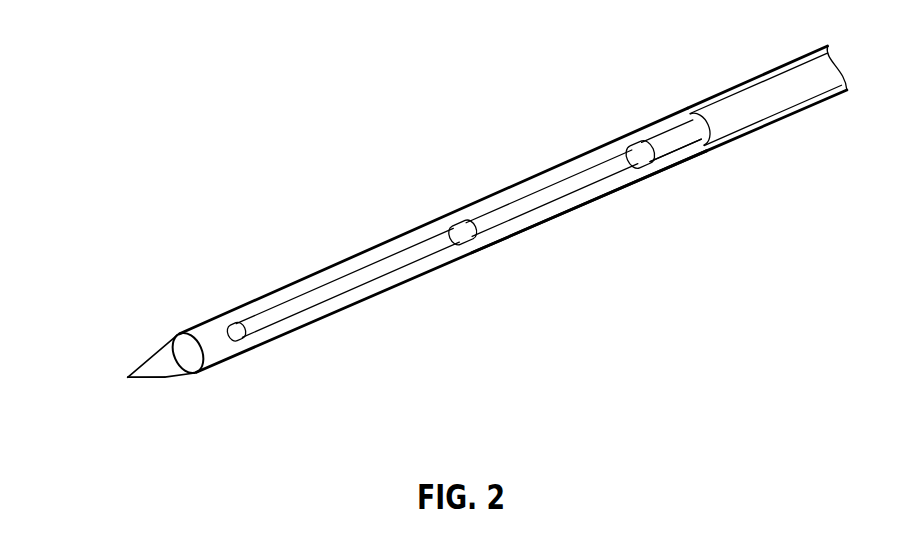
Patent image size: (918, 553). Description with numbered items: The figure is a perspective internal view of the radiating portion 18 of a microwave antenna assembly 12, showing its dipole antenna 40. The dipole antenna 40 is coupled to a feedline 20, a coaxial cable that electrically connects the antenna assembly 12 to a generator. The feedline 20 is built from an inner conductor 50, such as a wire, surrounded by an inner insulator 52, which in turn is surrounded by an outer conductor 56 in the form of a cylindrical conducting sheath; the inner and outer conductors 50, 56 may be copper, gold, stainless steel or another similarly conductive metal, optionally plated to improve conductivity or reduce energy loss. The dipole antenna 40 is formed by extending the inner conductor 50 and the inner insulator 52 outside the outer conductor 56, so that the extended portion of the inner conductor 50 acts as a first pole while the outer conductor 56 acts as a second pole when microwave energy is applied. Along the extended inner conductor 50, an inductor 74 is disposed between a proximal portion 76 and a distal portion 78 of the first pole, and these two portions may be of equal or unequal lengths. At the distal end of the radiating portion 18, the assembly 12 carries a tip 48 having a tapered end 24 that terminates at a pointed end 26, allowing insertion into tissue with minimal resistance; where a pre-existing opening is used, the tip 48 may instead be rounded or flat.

The antenna assembly 12 is at (457, 215).
The radiating portion 18 is at (315, 243).
The feedline 20 is at (768, 69).
The tapered end 24 is at (165, 342).
The pointed end 26 is at (128, 377).
The dipole antenna 40 is at (560, 213).
The tip 48 is at (157, 368).
The inner conductor 50 is at (579, 174).
The inner insulator 52 is at (661, 164).
The outer conductor 56 is at (677, 130).
The inductor 74 is at (460, 233).
The proximal portion 76 is at (628, 156).
The distal portion 78 is at (288, 304).